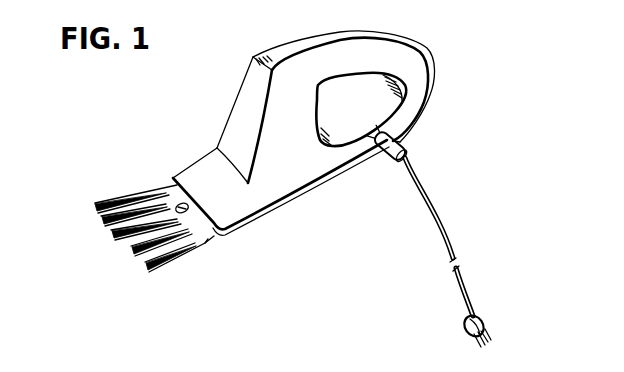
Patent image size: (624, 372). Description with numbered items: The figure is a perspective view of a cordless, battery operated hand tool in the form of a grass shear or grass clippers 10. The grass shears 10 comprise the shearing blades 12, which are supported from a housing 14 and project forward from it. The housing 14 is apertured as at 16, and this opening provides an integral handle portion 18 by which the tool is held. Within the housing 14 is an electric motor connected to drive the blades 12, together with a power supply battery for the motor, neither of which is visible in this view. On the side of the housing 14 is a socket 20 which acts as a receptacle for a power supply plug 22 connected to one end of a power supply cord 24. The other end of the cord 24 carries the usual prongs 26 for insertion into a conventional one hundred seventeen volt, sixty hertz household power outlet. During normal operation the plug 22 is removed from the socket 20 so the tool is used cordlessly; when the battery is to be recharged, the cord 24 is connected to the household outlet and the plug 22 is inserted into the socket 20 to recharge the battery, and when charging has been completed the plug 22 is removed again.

The grass shear 10 is at (306, 220).
The shearing blades 12 is at (128, 192).
The housing 14 is at (242, 130).
The aperture 16 is at (318, 112).
The handle portion 18 is at (368, 55).
The socket 20 is at (375, 152).
The power supply plug 22 is at (410, 137).
The power supply cord 24 is at (450, 243).
The prongs 26 is at (486, 322).